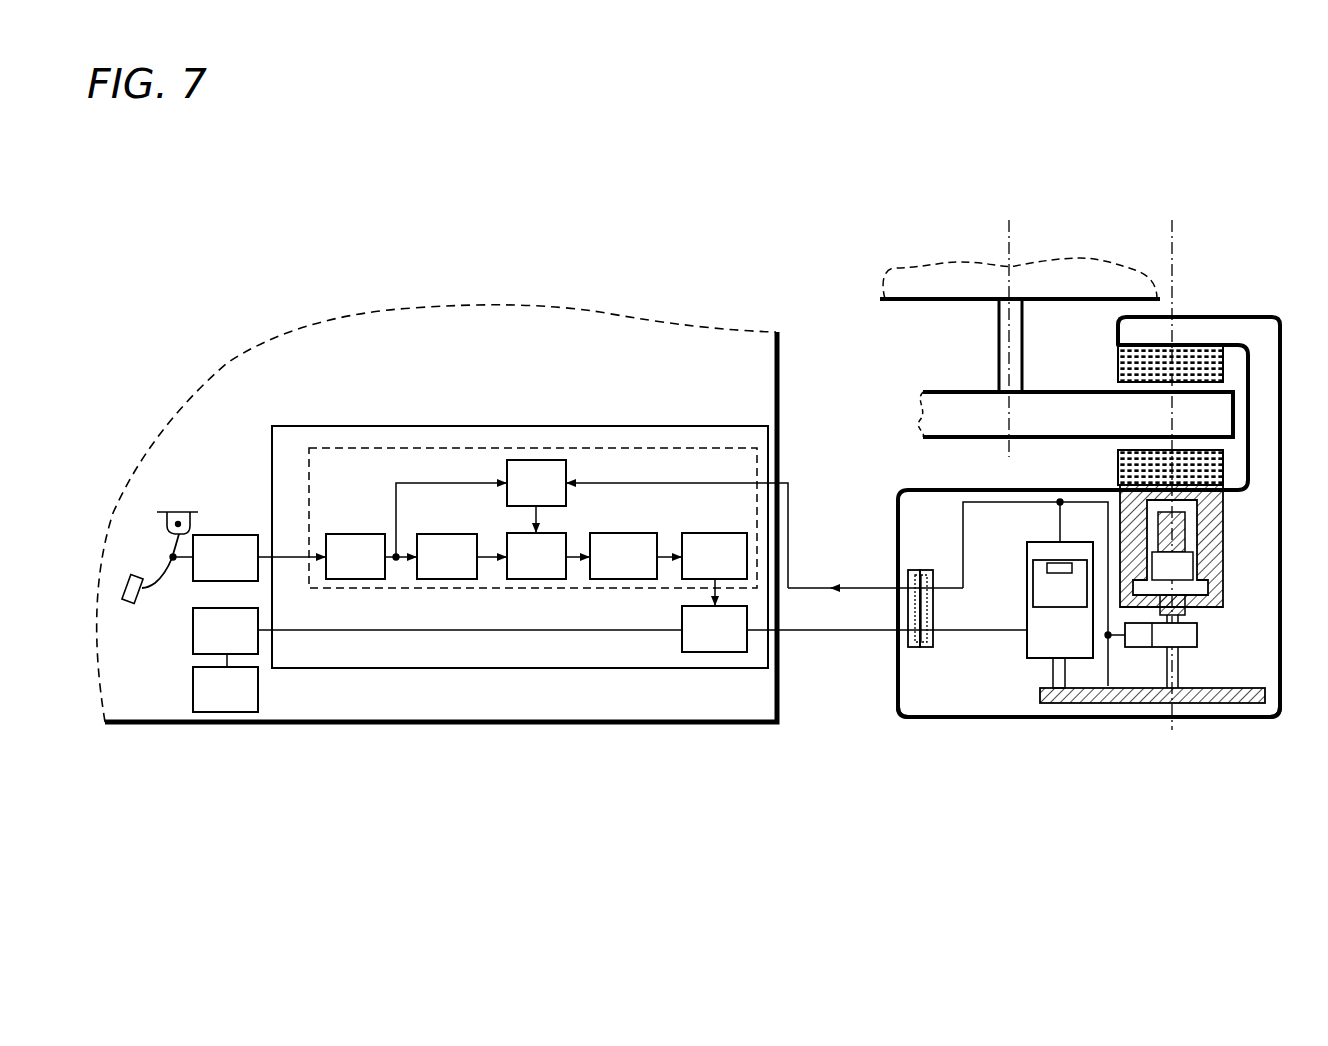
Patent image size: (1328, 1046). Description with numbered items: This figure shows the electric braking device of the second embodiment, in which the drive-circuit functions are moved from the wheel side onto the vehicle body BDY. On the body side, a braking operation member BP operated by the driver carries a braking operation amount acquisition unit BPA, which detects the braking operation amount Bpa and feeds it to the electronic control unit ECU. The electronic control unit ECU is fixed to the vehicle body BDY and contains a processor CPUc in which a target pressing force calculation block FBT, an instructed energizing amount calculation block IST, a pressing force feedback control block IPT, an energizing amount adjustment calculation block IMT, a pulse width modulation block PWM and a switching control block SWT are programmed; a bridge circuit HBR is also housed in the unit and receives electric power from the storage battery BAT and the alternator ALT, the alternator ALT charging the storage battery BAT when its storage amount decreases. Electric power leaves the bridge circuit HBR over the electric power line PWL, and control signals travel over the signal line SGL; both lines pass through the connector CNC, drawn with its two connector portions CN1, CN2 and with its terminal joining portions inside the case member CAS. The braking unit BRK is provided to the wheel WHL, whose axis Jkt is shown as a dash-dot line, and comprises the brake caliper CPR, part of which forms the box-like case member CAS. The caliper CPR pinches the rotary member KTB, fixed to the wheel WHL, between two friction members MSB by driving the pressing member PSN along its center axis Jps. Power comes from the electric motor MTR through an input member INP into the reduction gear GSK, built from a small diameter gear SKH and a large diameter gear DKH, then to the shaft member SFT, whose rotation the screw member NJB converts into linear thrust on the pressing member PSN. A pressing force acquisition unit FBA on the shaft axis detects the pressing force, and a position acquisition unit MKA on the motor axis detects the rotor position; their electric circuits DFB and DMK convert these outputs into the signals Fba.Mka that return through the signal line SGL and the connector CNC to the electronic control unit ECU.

The braking operation member BP is at (156, 557).
The braking operation amount acquisition unit BPA is at (215, 558).
The braking operation amount Bpa is at (291, 542).
The storage battery BAT is at (225, 631).
The alternator ALT is at (225, 683).
The electronic control unit ECU is at (338, 426).
The processor CPUc is at (533, 518).
The target pressing force calculation block FBT is at (355, 556).
The instructed energizing amount calculation block IST is at (431, 556).
The pressing force feedback control block IPT is at (481, 508).
The energizing amount adjustment calculation block IMT is at (521, 542).
The pulse width modulation block PWM is at (611, 556).
The switching control block SWT is at (702, 556).
The bridge circuit HBR is at (714, 615).
The actual pressing force and actual position signals Fba.Mka is at (677, 522).
The electric power line PWL is at (953, 632).
The signal line SGL is at (983, 515).
The vehicle body BDY is at (780, 365).
The connector CNC is at (907, 507).
The first connector CN1 is at (923, 570).
The second connector CN2 is at (903, 574).
The case member CAS is at (917, 717).
The braking unit BRK is at (1210, 288).
The brake caliper CPR is at (1272, 317).
The wheel WHL is at (893, 302).
The rotary member KTB is at (964, 392).
The rotation axis of wheel Jkt is at (1013, 222).
The center axis Jps is at (1175, 222).
The friction member MSB is at (1118, 365).
The pressing member PSN is at (1225, 562).
The screw member NJB is at (1192, 542).
The shaft member SFT is at (1180, 670).
The pressing force acquisition unit FBA is at (1199, 635).
The electric circuit DFB is at (1140, 647).
The electric motor MTR is at (1060, 600).
The position acquisition unit MKA is at (1060, 583).
The electric circuit DMK is at (1047, 568).
The input shaft INP is at (1053, 670).
The reduction gear GSK is at (1096, 710).
The small diameter gear SKH is at (1053, 703).
The large diameter gear DKH is at (1240, 703).